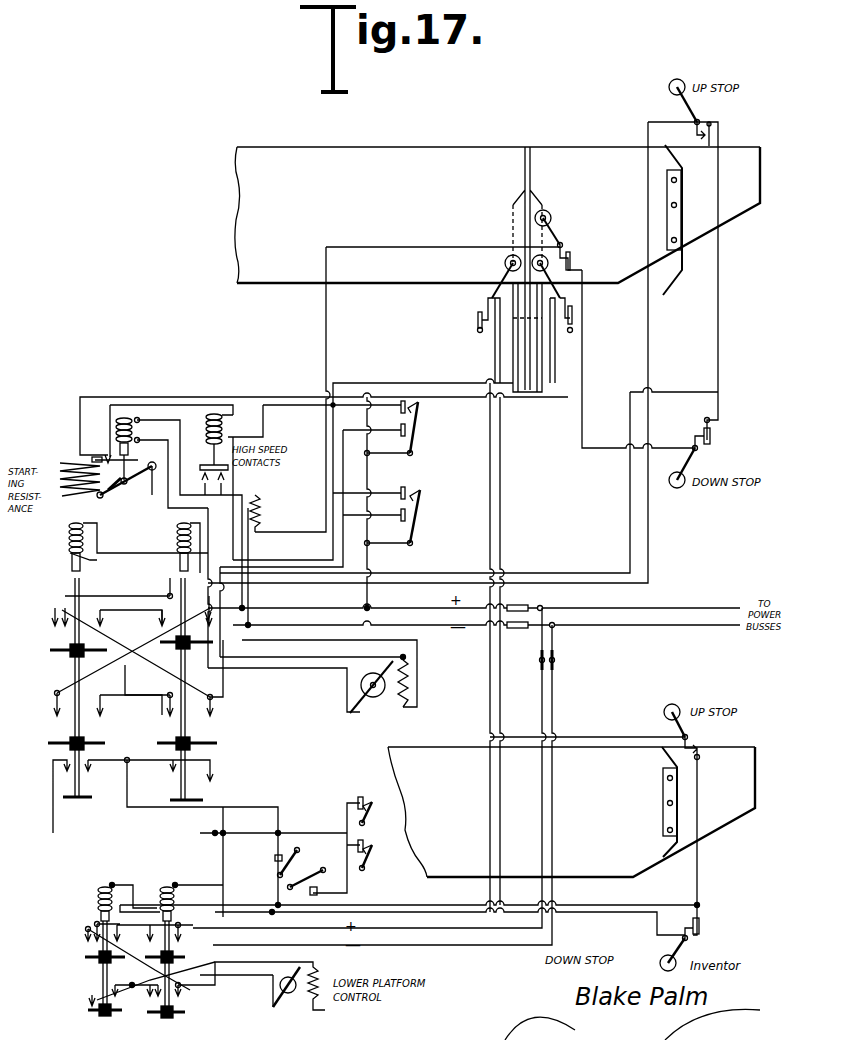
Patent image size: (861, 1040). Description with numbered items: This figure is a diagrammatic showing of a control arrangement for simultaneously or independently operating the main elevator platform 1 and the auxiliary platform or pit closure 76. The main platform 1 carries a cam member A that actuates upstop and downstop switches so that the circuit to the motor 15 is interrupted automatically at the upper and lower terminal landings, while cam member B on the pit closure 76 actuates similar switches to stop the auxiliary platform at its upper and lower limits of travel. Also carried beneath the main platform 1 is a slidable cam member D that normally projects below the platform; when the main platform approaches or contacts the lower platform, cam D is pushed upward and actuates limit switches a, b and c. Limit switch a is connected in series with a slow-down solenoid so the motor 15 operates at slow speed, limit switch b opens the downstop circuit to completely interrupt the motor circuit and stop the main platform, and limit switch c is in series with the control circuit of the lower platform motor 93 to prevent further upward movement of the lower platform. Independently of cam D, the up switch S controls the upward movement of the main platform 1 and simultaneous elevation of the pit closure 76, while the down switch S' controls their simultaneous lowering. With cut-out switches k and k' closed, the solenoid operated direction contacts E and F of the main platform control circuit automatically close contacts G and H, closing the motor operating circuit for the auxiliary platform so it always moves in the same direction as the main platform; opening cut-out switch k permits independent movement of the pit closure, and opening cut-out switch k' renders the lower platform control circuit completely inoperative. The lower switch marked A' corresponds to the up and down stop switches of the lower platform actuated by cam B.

The main platform 1 is at (375, 158).
The auxiliary platform or pit closure 76 is at (580, 762).
The motor 15 is at (374, 705).
The lower platform motor 93 is at (288, 1000).
The cam member A is at (681, 220).
The cam member B is at (680, 790).
The limit switch a is at (580, 302).
The limit switch b is at (566, 252).
The limit switch c is at (485, 299).
The cam member D is at (535, 358).
The up switch S is at (404, 428).
The down switch S' is at (411, 516).
The solenoid operated direction contact E is at (48, 717).
The solenoid operated direction contact F is at (192, 720).
The contact G is at (89, 781).
The contact H is at (170, 783).
The cut-out switch k is at (271, 863).
The cut-out switch k' is at (308, 871).
The lower platform down switch A' is at (360, 845).